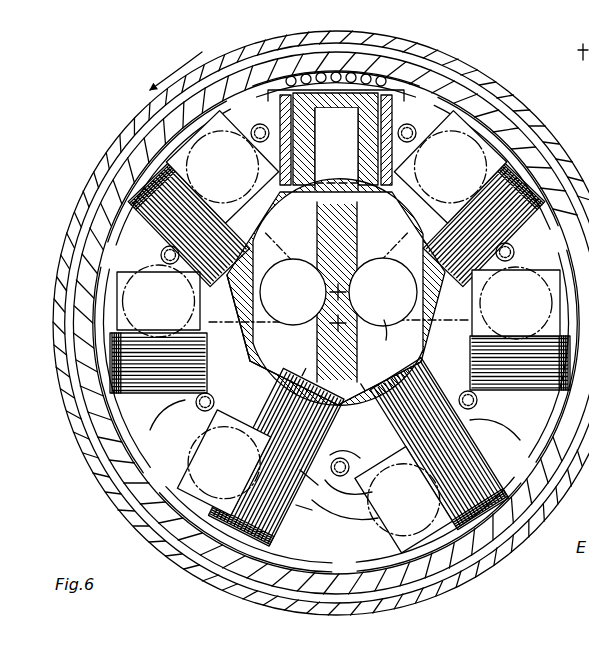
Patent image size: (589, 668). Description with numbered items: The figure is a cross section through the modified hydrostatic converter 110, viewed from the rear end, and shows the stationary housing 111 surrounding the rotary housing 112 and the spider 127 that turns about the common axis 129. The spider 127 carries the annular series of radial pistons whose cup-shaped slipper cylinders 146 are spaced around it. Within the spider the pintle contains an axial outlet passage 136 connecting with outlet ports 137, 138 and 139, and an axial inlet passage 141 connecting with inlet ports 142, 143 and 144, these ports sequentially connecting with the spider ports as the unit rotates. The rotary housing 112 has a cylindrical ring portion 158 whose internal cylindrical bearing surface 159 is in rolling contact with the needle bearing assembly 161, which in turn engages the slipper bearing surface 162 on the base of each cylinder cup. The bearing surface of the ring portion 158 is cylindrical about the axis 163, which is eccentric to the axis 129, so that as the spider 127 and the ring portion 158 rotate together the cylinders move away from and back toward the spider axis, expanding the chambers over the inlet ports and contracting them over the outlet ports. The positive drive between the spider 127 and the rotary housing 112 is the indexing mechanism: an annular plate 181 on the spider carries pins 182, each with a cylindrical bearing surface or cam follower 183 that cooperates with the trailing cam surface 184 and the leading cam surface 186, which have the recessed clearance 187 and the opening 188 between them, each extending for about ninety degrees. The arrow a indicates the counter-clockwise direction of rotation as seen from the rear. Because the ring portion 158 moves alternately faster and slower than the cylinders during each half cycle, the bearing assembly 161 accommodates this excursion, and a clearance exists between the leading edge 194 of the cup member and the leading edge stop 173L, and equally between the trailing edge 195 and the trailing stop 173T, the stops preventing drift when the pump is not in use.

The arrow a is at (176, 67).
The modified hydrostatic converter 110 is at (101, 161).
The stationary housing 111 is at (138, 128).
The rotary housing 112 is at (80, 312).
The spider 127 is at (152, 444).
The common axis 129 is at (340, 286).
The axial outlet passage 136 is at (384, 320).
The outlet port 137 is at (364, 252).
The outlet port 138 is at (450, 290).
The outlet port 139 is at (372, 386).
The axial inlet passage 141 is at (322, 304).
The inlet port 142 is at (318, 230).
The inlet port 143 is at (266, 323).
The inlet port 144 is at (300, 378).
The slipper cylinders 146 is at (165, 412).
The cylindrical ring portion 158 is at (520, 140).
The internal cylindrical bearing surface 159 is at (456, 108).
The needle bearing assembly 161 is at (346, 68).
The slipper bearing surface 162 is at (481, 131).
The axis 163 is at (338, 332).
The trailing edge stop 173T is at (434, 98).
The leading edge stop 173L is at (250, 92).
The annular plate 181 is at (347, 480).
The pins 182 is at (366, 468).
The cam follower 183 is at (312, 514).
The trailing cam surface 184 is at (315, 484).
The leading cam surface 186 is at (378, 490).
The recessed clearance 187 is at (380, 520).
The opening 188 is at (312, 408).
The leading edge 194 is at (287, 78).
The trailing edge 195 is at (387, 98).